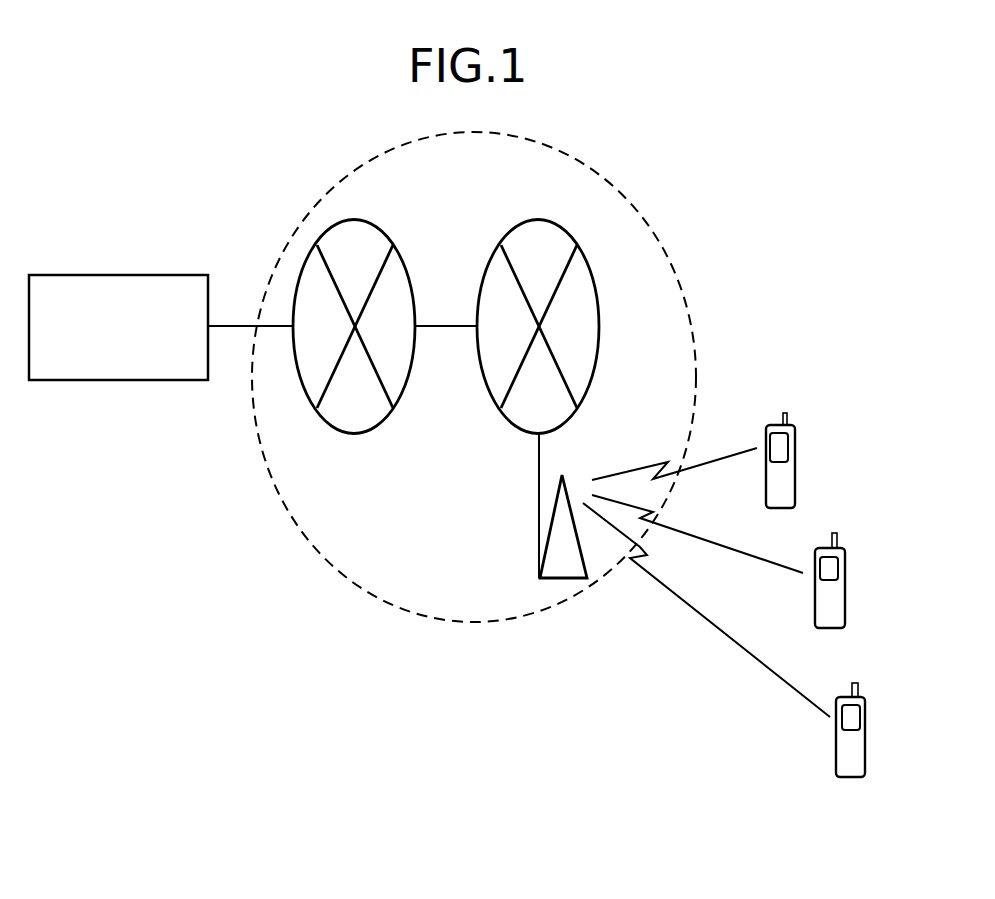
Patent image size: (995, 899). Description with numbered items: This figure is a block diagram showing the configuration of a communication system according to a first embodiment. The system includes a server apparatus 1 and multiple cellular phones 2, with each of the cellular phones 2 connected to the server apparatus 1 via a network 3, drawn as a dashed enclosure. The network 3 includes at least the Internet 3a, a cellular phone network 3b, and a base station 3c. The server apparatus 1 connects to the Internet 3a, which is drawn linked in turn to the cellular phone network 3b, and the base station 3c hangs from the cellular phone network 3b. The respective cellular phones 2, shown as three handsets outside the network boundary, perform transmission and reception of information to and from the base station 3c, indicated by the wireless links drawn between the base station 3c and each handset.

The server apparatus 1 is at (97, 380).
The cellular phones 2 is at (795, 465).
The network 3 is at (641, 207).
The Internet 3a is at (377, 222).
The cellular phone network 3b is at (598, 300).
The base station 3c is at (552, 555).